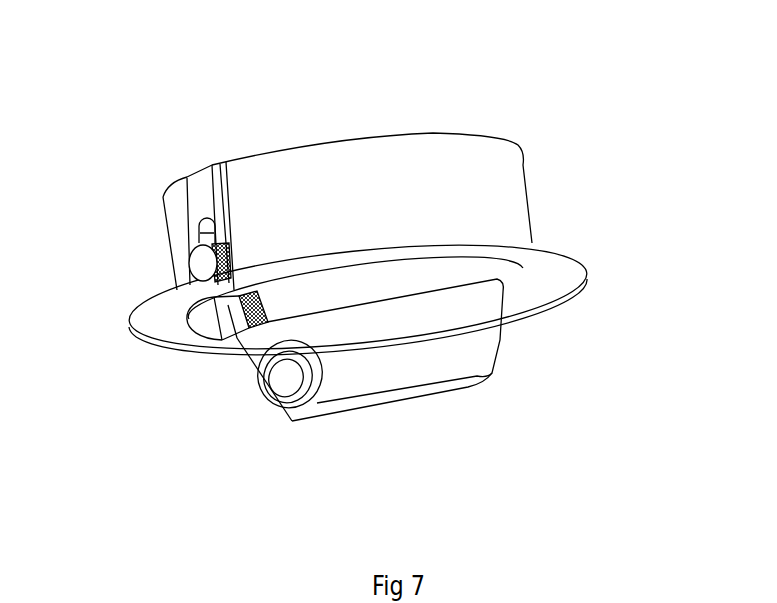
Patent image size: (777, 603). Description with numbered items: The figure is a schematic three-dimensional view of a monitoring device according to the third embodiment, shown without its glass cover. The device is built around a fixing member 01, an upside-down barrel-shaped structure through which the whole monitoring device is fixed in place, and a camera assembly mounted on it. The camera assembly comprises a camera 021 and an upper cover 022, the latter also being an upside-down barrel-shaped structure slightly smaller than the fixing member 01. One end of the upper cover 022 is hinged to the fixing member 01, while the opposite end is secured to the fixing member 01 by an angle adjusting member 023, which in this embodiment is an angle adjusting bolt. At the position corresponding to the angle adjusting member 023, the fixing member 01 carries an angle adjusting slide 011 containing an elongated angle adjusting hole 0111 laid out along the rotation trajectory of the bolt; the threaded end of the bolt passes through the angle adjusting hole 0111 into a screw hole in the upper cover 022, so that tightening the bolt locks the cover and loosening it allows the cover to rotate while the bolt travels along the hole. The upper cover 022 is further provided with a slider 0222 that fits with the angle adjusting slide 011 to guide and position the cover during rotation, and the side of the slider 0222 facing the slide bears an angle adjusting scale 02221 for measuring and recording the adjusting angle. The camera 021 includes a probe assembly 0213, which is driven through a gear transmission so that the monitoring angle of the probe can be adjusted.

The fixing member 01 is at (268, 146).
The angle adjusting slide 011 is at (215, 187).
The angle adjusting hole 0111 is at (194, 242).
The angle adjusting member 023 is at (190, 265).
The camera 021 is at (463, 347).
The probe assembly 0213 is at (313, 371).
The upper cover 022 is at (470, 272).
The slider 0222 is at (290, 287).
The angle adjusting scale 02221 is at (258, 290).